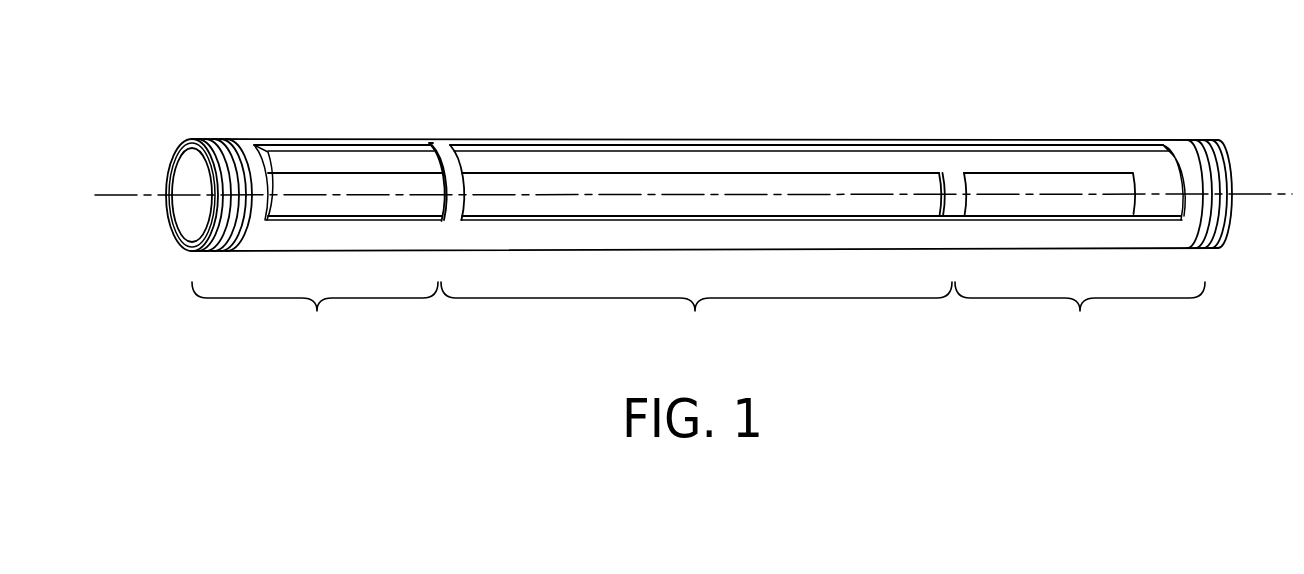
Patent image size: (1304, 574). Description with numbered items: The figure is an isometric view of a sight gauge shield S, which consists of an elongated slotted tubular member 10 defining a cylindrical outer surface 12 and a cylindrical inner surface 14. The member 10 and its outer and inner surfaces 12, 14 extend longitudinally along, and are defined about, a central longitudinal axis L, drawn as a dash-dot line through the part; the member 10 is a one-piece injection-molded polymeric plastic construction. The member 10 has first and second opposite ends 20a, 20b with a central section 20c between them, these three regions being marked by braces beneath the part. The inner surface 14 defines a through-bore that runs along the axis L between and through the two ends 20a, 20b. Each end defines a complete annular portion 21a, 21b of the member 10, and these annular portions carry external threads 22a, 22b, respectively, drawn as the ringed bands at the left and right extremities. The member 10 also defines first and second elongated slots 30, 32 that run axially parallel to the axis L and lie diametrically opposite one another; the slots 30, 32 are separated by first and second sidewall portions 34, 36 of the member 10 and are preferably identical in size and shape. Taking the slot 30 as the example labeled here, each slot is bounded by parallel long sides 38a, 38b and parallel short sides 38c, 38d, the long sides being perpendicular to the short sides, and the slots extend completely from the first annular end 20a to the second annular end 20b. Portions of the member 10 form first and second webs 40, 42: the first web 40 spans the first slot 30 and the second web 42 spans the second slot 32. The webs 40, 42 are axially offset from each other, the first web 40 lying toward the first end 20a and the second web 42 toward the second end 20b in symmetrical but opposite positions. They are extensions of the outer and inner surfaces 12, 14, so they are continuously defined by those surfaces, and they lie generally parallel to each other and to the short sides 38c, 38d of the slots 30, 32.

The elongated slotted tubular member 10 is at (1072, 138).
The cylindrical outer surface 12 is at (358, 229).
The cylindrical inner surface 14 is at (195, 161).
The first end 20a is at (315, 312).
The second end 20b is at (1080, 312).
The central section 20c is at (696, 312).
The first annular portion 21a is at (190, 138).
The second annular portion 21b is at (1218, 246).
The first external threads 22a is at (215, 138).
The second external threads 22b is at (1200, 138).
The first elongated slot 30 is at (765, 150).
The second elongated slot 32 is at (832, 172).
The first sidewall portion 34 is at (718, 228).
The second sidewall portion 36 is at (720, 140).
The first long side 38a is at (652, 149).
The second long side 38b is at (560, 217).
The first short side 38c is at (268, 160).
The second short side 38d is at (1163, 143).
The first web 40 is at (452, 168).
The second web 42 is at (965, 185).
The sight gauge shield S is at (923, 120).
The central longitudinal axis L is at (103, 198).